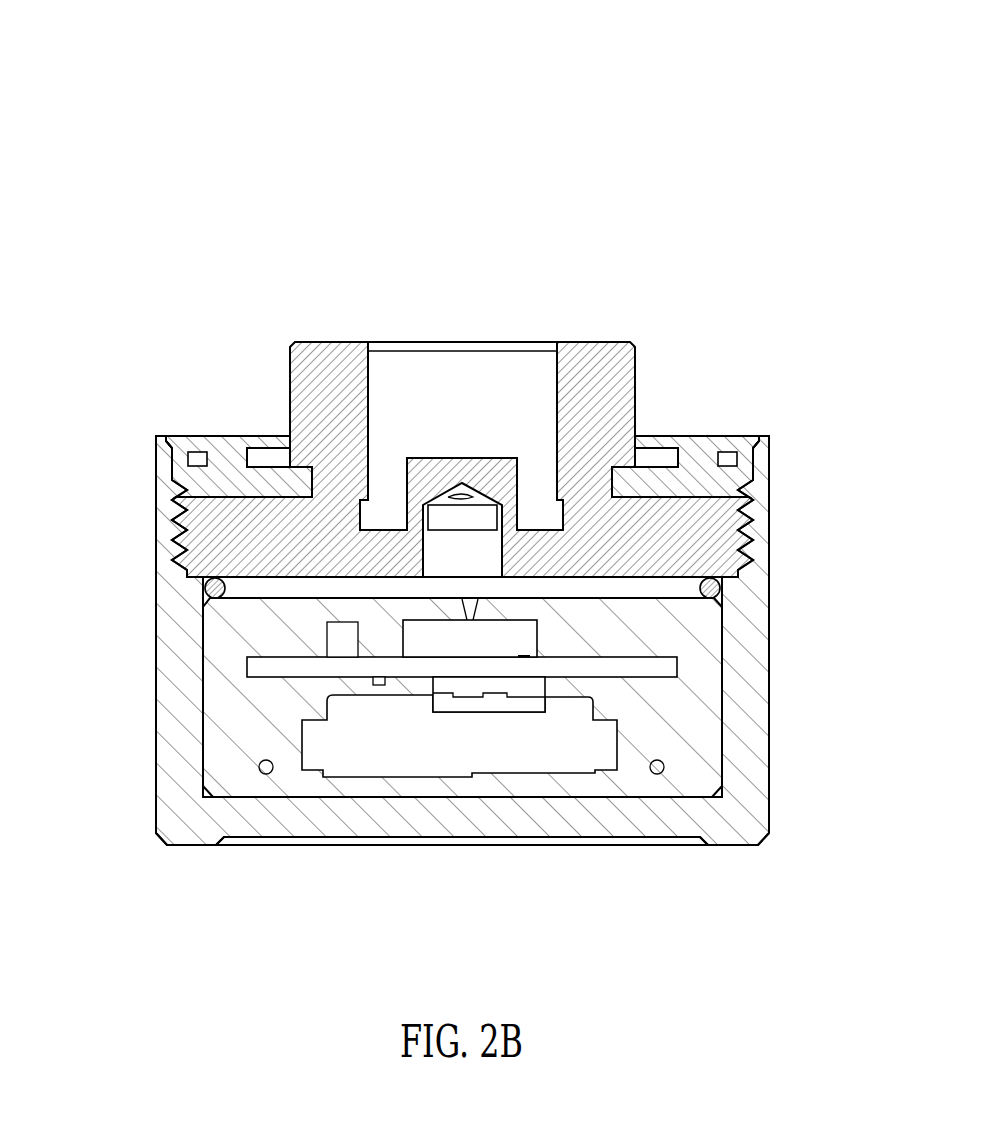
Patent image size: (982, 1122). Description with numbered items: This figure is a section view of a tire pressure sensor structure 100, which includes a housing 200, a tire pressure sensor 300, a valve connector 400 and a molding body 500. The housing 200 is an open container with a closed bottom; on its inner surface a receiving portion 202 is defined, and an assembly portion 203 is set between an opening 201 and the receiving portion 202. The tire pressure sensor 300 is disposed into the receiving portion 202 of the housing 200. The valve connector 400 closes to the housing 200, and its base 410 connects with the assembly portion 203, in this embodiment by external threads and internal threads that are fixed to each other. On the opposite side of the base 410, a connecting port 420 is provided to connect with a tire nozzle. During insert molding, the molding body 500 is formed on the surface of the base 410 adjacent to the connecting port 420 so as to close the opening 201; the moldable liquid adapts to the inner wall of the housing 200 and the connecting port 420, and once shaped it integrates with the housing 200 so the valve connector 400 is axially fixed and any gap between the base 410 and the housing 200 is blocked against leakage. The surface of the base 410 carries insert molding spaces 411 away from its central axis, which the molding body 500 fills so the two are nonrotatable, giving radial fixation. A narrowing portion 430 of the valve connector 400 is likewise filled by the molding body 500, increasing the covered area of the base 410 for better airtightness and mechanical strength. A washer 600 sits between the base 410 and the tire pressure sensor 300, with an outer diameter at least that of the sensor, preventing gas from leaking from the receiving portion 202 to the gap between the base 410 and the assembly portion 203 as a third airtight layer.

The tire pressure sensor structure 100 is at (73, 41).
The housing 200 is at (147, 667).
The opening 201 is at (207, 407).
The receiving portion 202 is at (175, 765).
The assembly portion 203 is at (160, 527).
The tire pressure sensor 300 is at (703, 713).
The valve connector 400 is at (462, 388).
The base 410 is at (328, 486).
The insert molding space 411 is at (698, 460).
The connecting port 420 is at (318, 362).
The narrowing portion 430 is at (613, 480).
The molding body 500 is at (690, 483).
The washer 600 is at (680, 589).